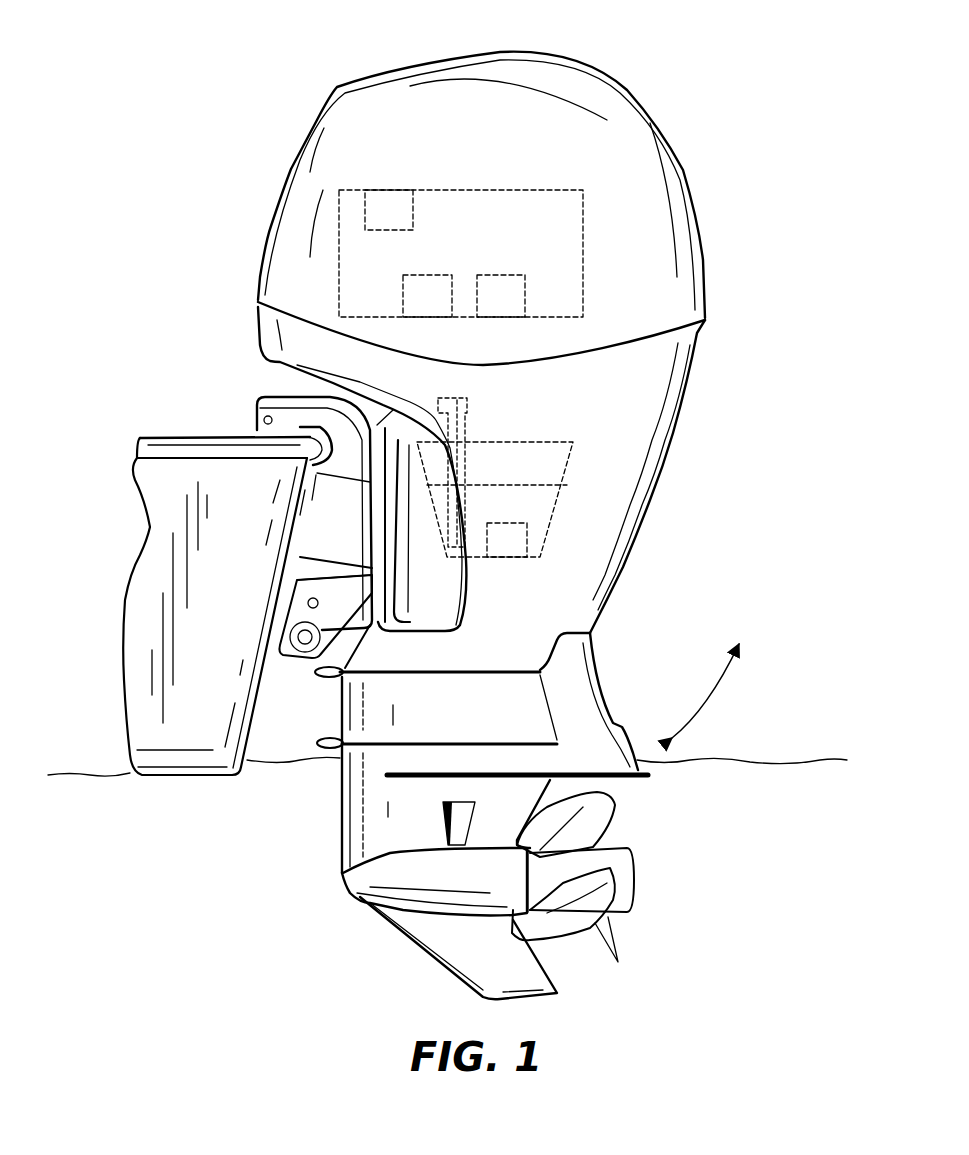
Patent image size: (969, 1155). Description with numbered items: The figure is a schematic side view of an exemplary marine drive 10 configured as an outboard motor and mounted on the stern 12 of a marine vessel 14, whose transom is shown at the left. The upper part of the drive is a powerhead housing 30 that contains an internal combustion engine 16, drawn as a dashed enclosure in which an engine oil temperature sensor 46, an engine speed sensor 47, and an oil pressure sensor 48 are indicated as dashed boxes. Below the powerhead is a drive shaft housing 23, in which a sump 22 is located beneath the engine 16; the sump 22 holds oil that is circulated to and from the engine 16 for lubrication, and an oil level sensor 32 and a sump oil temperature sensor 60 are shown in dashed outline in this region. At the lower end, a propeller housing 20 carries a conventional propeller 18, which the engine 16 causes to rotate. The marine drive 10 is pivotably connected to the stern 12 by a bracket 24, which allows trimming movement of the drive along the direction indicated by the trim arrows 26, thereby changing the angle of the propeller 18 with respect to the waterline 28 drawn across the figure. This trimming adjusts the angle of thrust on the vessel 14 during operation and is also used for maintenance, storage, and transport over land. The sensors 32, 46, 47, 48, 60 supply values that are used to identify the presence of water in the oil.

The marine drive 10 is at (682, 88).
The stern 12 is at (262, 723).
The marine vessel 14 is at (152, 447).
The internal combustion engine 16 is at (510, 188).
The propeller 18 is at (630, 893).
The propeller housing 20 is at (413, 883).
The sump 22 is at (573, 460).
The drive shaft housing 23 is at (653, 503).
The bracket 24 is at (273, 400).
The trim arrows 26 is at (713, 693).
The waterline 28 is at (777, 757).
The powerhead housing 30 is at (477, 52).
The oil level sensor 32 is at (470, 400).
The engine oil temperature sensor 46 is at (390, 232).
The engine speed sensor 47 is at (498, 275).
The oil pressure sensor 48 is at (427, 275).
The sump oil temperature sensor 60 is at (527, 530).